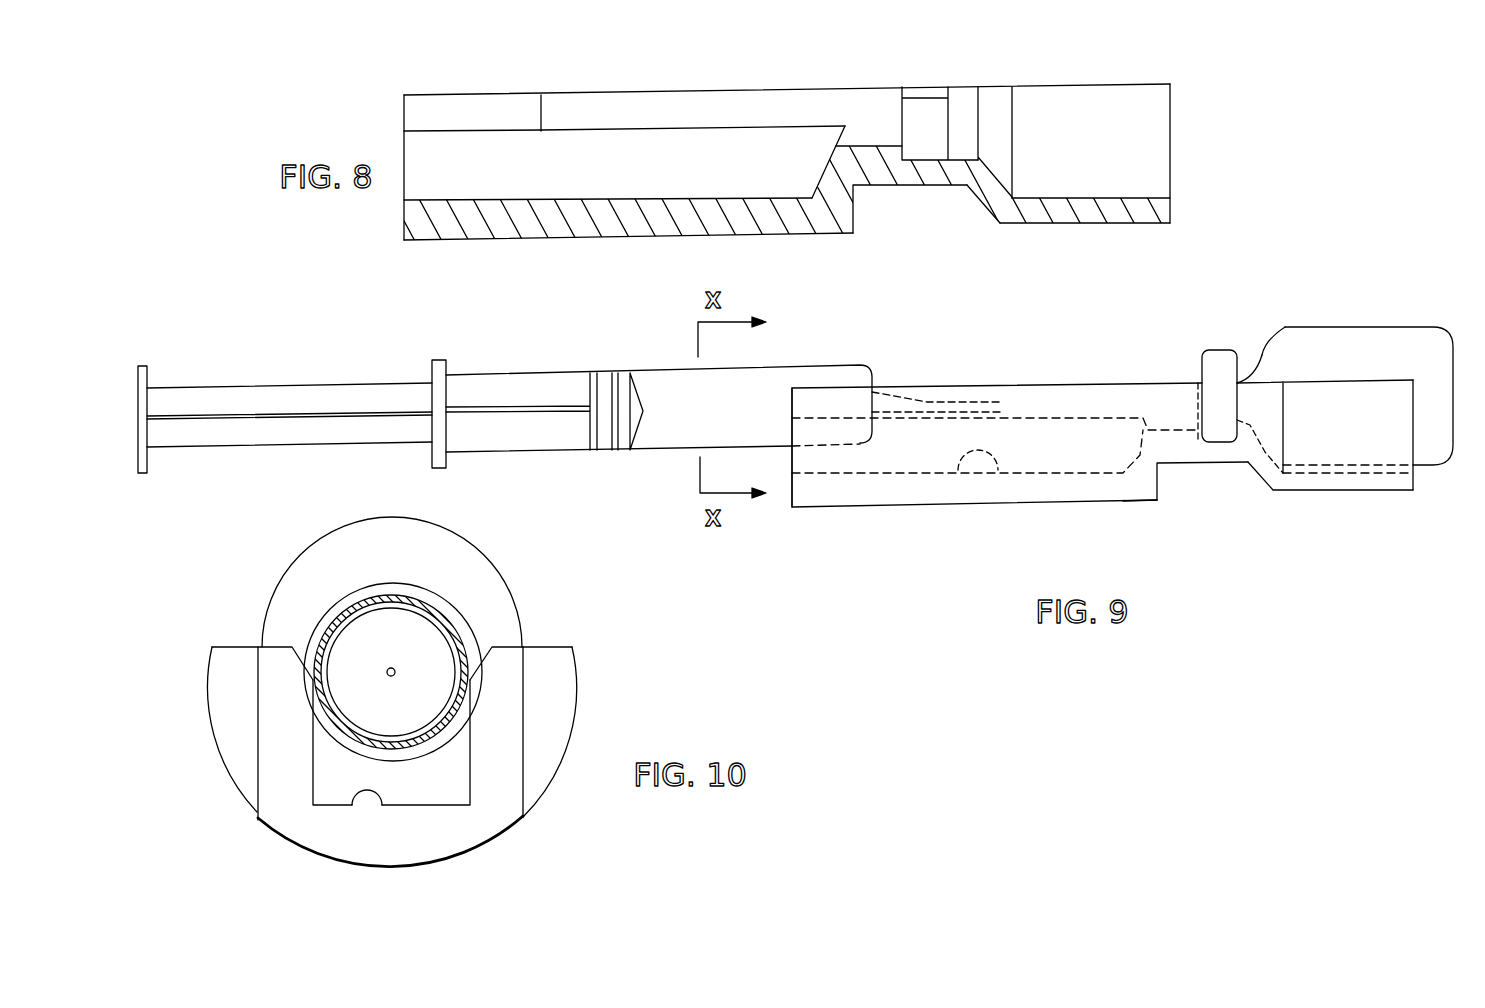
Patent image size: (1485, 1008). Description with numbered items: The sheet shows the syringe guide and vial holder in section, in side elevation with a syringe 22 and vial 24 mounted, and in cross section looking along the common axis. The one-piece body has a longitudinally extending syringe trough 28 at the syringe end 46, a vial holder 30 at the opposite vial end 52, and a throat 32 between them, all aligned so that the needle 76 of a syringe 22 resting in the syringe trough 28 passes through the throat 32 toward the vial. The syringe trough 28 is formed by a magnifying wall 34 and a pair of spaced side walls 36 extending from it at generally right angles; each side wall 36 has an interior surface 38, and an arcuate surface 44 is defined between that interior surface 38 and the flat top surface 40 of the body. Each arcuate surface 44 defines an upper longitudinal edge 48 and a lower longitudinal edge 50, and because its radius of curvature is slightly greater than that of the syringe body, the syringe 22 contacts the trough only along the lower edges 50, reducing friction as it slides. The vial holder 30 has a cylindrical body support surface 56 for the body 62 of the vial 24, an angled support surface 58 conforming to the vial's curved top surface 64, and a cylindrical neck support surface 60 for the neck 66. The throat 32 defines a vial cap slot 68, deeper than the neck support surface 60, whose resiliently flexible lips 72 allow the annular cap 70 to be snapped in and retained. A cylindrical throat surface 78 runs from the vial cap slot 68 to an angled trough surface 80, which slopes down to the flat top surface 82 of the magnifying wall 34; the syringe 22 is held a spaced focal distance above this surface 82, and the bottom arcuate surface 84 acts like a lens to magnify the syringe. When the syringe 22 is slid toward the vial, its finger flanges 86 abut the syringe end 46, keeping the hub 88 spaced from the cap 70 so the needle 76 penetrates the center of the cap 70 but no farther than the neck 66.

In FIG. 9, the syringe 22 is at (258, 336).
In FIG. 10, the syringe 22 is at (407, 597).
In FIG. 9, the vial 24 is at (1448, 470).
In FIG. 9, the syringe trough 28 is at (893, 488).
In FIG. 9, the vial holder 30 is at (1320, 506).
In FIG. 9, the throat 32 is at (1176, 474).
In FIG. 8, the magnifying wall 34 is at (768, 216).
In FIG. 9, the magnifying wall 34 is at (1103, 482).
In FIG. 10, the magnifying wall 34 is at (455, 832).
In FIG. 10, the side walls 36 is at (282, 753).
In FIG. 8, the interior surface 38 is at (590, 158).
In FIG. 8, the top surface 40 is at (443, 95).
In FIG. 10, the top surface 40 is at (520, 647).
In FIG. 8, the arcuate surface 44 is at (488, 110).
In FIG. 8, the syringe end 46 is at (404, 131).
In FIG. 9, the syringe end 46 is at (790, 493).
In FIG. 10, the upper longitudinal edge 48 is at (493, 617).
In FIG. 8, the lower longitudinal edge 50 is at (542, 95).
In FIG. 9, the lower longitudinal edge 50 is at (1013, 412).
In FIG. 10, the lower longitudinal edge 50 is at (470, 680).
In FIG. 8, the vial end 52 is at (1172, 207).
In FIG. 9, the vial end 52 is at (1420, 487).
In FIG. 8, the body support surface 56 is at (1072, 137).
In FIG. 8, the angled support surface 58 is at (998, 103).
In FIG. 8, the neck support surface 60 is at (966, 117).
In FIG. 9, the body of vial 62 is at (1360, 343).
In FIG. 10, the body of vial 62 is at (377, 548).
In FIG. 9, the curved top surface 64 is at (1265, 343).
In FIG. 9, the neck 66 is at (1248, 388).
In FIG. 8, the vial cap slot 68 is at (923, 146).
In FIG. 9, the cap 70 is at (1212, 360).
In FIG. 10, the cap 70 is at (318, 620).
In FIG. 8, the lips 72 is at (937, 95).
In FIG. 10, the needle 76 is at (390, 668).
In FIG. 8, the cylindrical throat surface 78 is at (868, 146).
In FIG. 8, the angled trough surface 80 is at (812, 158).
In FIG. 9, the angled trough surface 80 is at (1137, 447).
In FIG. 8, the top surface of magnifying wall 82 is at (667, 193).
In FIG. 9, the top surface of magnifying wall 82 is at (957, 478).
In FIG. 10, the top surface of magnifying wall 82 is at (375, 792).
In FIG. 8, the bottom arcuate surface 84 is at (586, 240).
In FIG. 10, the bottom arcuate surface 84 is at (310, 857).
In FIG. 9, the finger flanges 86 is at (438, 370).
In FIG. 9, the hub 88 is at (923, 402).